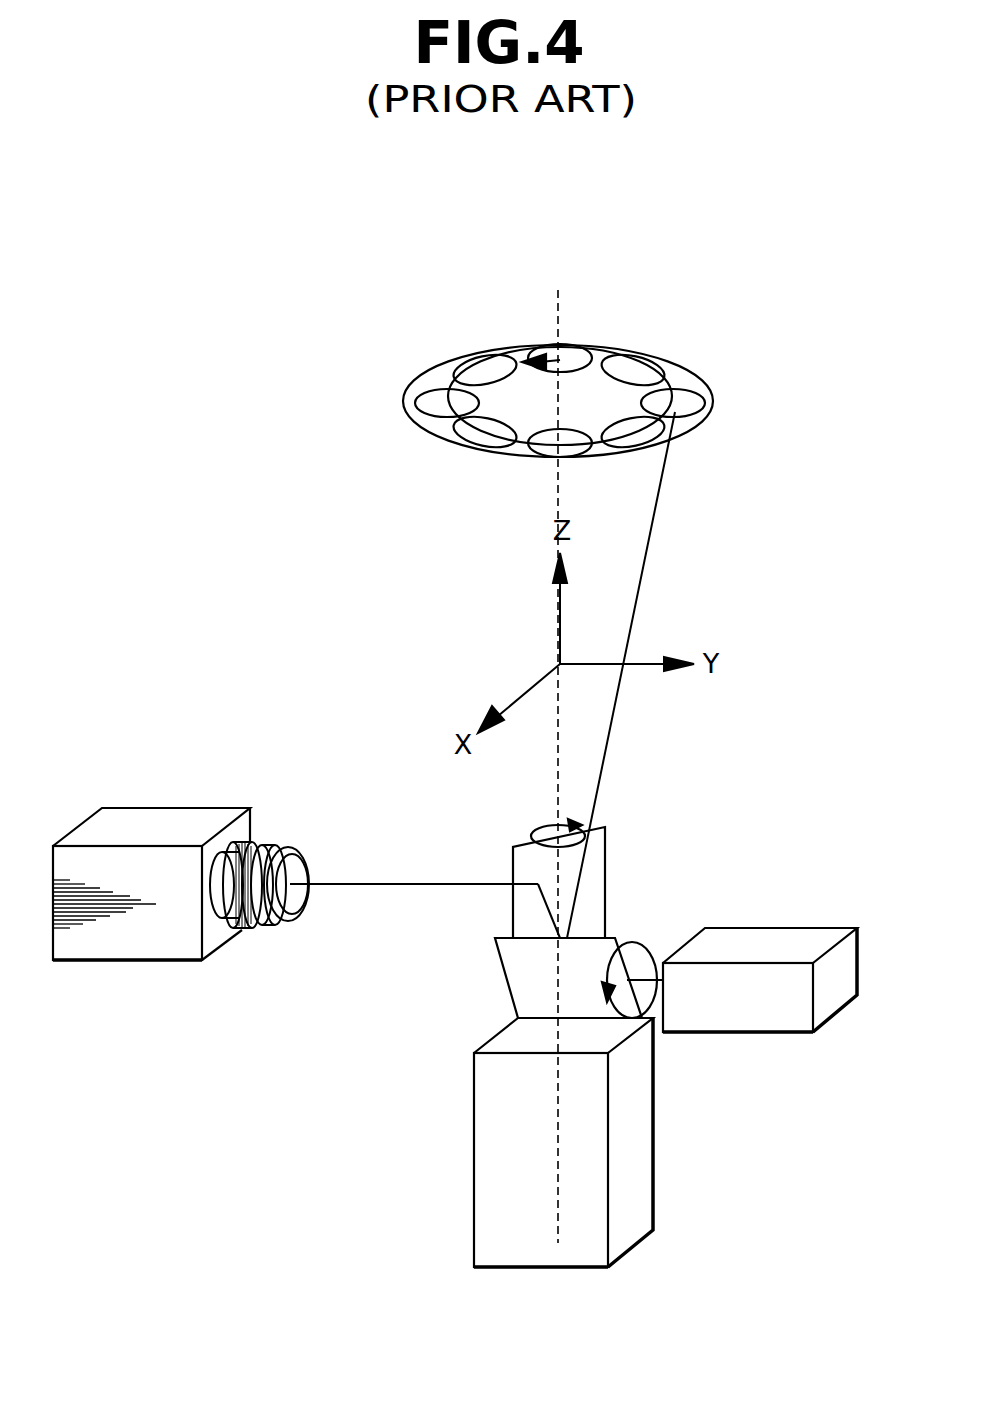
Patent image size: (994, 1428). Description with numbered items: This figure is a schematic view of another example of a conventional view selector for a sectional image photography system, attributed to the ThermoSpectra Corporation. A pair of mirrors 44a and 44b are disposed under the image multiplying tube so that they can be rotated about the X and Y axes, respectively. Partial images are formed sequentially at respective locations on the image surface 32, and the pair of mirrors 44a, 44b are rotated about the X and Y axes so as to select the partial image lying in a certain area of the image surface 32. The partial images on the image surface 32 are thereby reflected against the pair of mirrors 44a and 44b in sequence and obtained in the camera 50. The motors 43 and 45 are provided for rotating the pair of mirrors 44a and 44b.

The image surface 32 is at (685, 380).
The camera 50 is at (155, 818).
The mirror 44a is at (510, 975).
The mirror 44b is at (605, 867).
The motor 45 is at (802, 945).
The motor 43 is at (635, 1130).